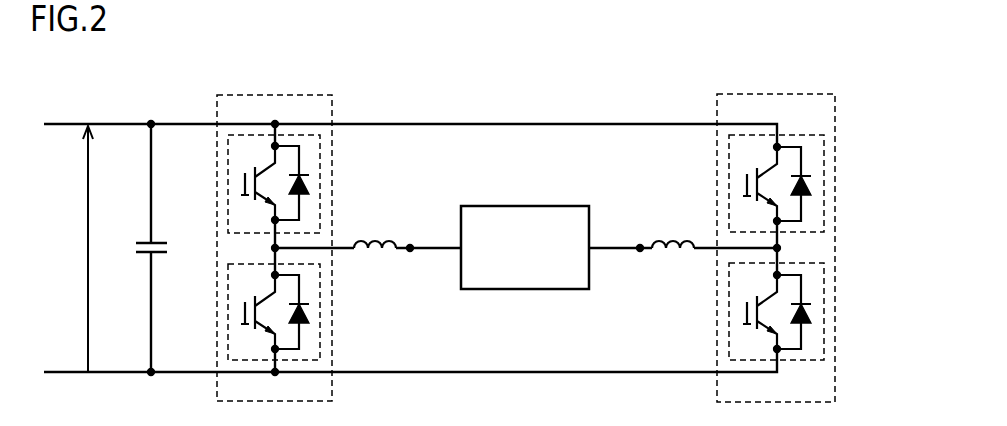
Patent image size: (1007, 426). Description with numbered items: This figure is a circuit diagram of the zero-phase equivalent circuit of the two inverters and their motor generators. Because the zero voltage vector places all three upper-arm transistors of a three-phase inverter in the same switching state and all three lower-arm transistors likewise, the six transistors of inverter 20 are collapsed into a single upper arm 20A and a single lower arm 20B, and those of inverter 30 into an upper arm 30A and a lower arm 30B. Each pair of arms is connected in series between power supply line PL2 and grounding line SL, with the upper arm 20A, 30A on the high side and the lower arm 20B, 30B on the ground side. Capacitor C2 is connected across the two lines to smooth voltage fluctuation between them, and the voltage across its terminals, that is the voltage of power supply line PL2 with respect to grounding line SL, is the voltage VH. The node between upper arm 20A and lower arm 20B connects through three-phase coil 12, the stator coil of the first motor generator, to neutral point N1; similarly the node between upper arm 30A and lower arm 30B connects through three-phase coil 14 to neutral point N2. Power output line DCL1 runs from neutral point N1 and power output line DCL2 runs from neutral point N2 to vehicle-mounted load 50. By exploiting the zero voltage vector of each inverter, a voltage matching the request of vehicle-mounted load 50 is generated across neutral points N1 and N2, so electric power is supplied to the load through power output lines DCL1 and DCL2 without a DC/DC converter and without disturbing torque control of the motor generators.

The three-phase coil 12 is at (380, 225).
The three-phase coil 14 is at (680, 224).
The inverter 20 is at (281, 95).
The upper arm 20A is at (320, 141).
The lower arm 20B is at (320, 334).
The inverter 30 is at (783, 94).
The upper arm 30A is at (824, 183).
The lower arm 30B is at (824, 311).
The vehicle-mounted load 50 is at (521, 207).
The capacitor C2 is at (163, 243).
The voltage VH is at (71, 249).
The power supply line PL2 is at (571, 124).
The grounding line SL is at (568, 373).
The neutral point N1 is at (410, 252).
The neutral point N2 is at (640, 252).
The power output line DCL1 is at (443, 250).
The power output line DCL2 is at (610, 250).